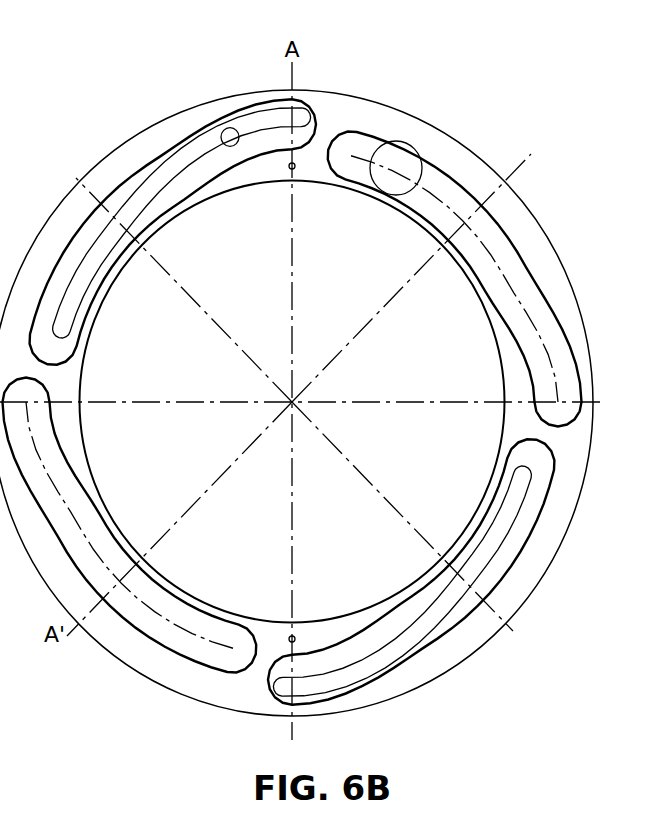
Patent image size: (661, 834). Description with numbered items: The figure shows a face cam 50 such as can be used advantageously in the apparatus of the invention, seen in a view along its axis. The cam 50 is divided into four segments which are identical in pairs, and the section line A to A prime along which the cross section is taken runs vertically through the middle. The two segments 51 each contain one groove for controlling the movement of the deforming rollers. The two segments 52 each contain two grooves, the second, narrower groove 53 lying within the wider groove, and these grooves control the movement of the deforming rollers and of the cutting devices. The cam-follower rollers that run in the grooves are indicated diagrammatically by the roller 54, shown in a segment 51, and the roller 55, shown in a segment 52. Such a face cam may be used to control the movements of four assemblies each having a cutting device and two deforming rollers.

The cam ring 50 is at (455, 147).
The segment 51 is at (508, 245).
The segment 52 is at (73, 233).
The inner guide groove 53 is at (263, 125).
The cam-follower roller 54 is at (402, 144).
The cam-follower roller 55 is at (224, 130).